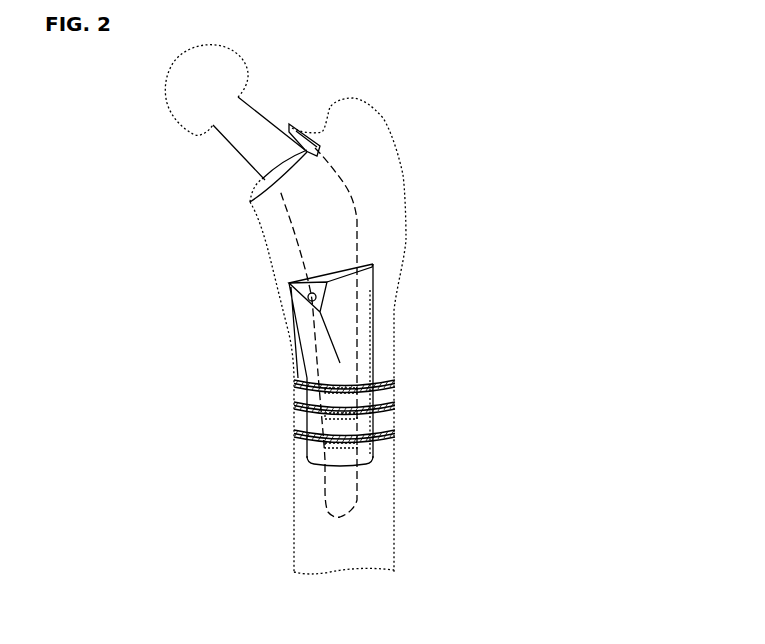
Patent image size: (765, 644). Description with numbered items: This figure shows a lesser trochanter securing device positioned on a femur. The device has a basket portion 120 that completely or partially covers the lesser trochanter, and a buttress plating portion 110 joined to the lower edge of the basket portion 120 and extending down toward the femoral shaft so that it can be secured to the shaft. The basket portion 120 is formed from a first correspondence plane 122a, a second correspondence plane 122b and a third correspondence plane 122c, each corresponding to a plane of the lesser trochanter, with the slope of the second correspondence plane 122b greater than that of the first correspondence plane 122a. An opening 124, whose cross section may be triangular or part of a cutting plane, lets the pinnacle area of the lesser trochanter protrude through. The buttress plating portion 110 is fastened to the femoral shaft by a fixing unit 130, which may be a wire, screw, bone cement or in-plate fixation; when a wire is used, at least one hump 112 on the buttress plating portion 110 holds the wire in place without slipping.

The buttress plating portion 110 is at (355, 475).
The hump 112 is at (370, 437).
The basket portion 120 is at (346, 337).
The first correspondence plane 122a is at (357, 325).
The second correspondence plane 122b is at (298, 325).
The third correspondence plane 122c is at (344, 262).
The opening 124 is at (309, 301).
The fixing unit 130 is at (385, 395).